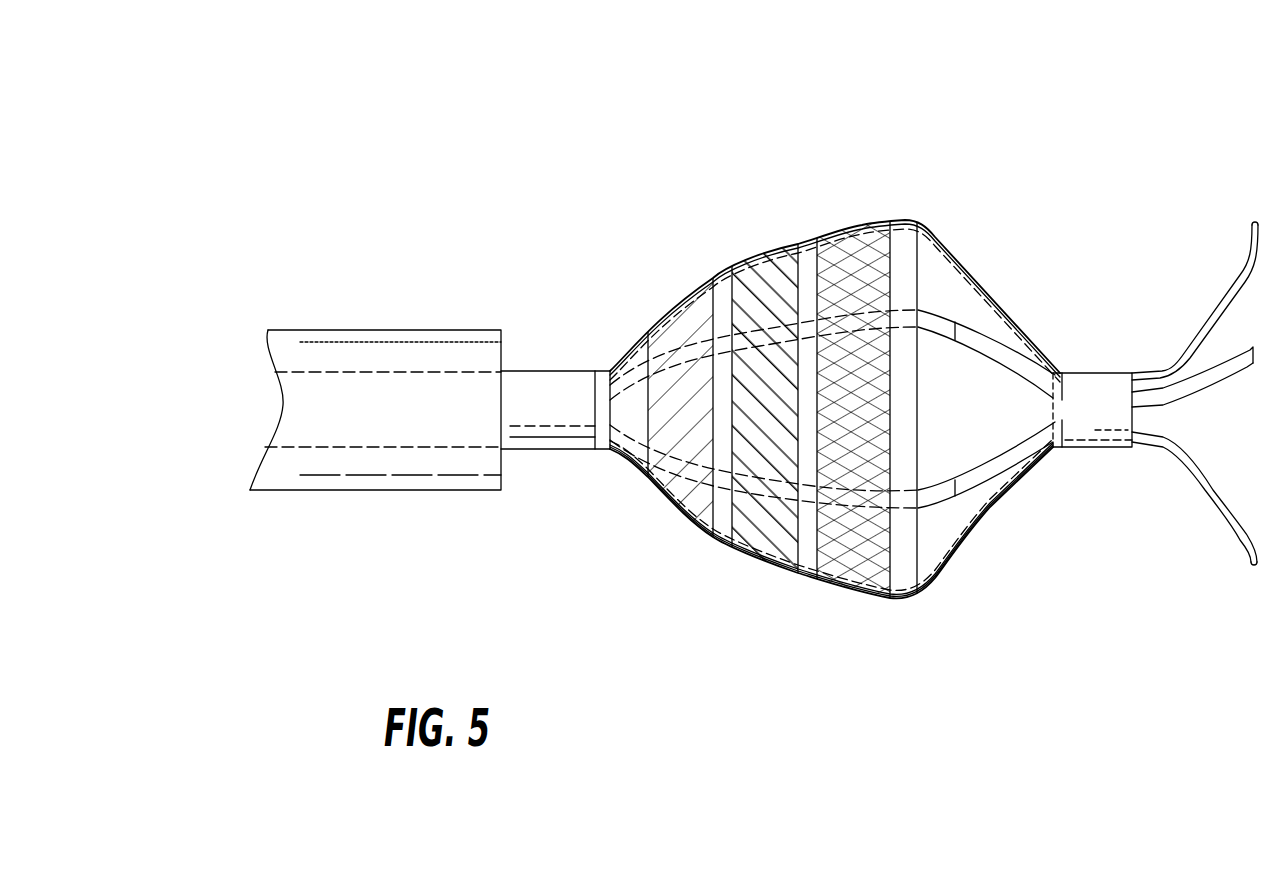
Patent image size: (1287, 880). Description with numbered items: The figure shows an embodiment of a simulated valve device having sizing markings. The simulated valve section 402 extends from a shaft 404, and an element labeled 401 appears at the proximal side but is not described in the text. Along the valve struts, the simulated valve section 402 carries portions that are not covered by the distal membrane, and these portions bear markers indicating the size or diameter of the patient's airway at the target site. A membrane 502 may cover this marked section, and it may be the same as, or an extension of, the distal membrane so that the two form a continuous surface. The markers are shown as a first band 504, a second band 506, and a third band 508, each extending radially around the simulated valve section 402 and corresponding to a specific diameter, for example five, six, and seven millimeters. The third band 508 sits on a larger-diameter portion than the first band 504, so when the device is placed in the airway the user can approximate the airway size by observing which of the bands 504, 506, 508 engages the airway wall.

The catheter shaft 401 is at (375, 330).
The simulated valve section 402 is at (790, 126).
The shaft 404 is at (556, 385).
The membrane 502 is at (687, 533).
The first band 504 is at (677, 300).
The second band 506 is at (767, 252).
The third band 508 is at (857, 222).